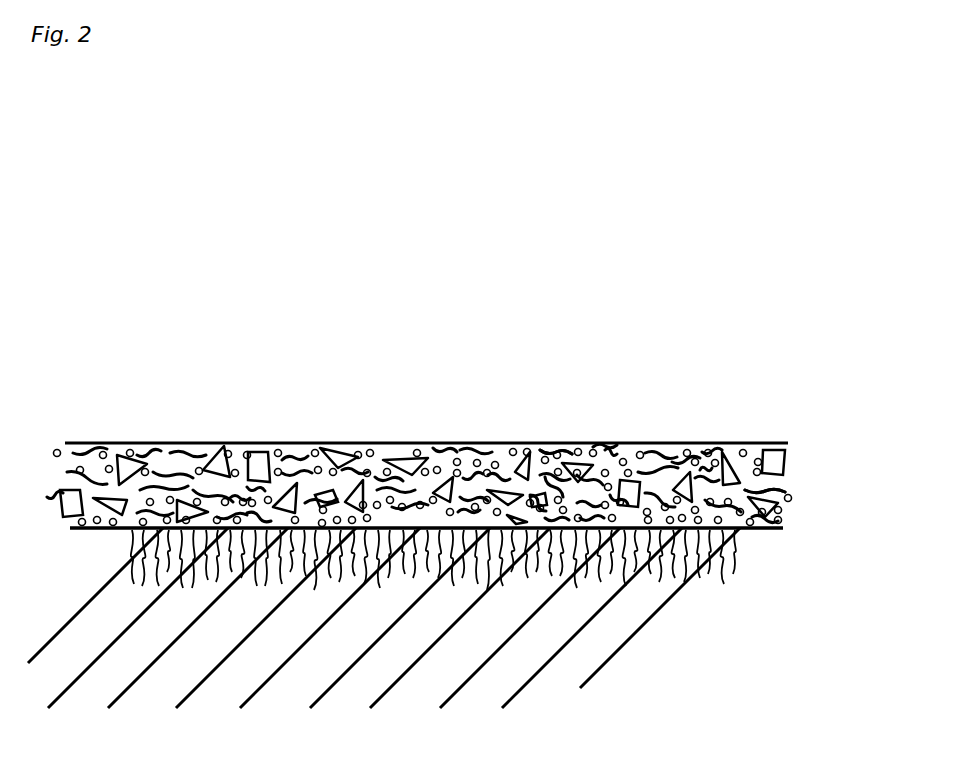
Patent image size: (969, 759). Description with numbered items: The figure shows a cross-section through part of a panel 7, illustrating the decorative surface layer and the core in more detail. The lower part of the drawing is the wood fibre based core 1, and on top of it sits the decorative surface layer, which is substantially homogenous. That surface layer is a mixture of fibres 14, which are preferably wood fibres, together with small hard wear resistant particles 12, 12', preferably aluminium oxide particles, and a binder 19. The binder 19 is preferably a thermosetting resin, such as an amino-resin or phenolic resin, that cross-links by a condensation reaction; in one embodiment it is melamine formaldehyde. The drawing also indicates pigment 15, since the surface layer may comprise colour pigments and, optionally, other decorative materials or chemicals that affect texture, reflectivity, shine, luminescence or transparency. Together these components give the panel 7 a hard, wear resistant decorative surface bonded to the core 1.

The wood fibre based core 1 is at (657, 597).
The panel 7 is at (145, 413).
The wear resistant particles 12 is at (812, 437).
The wear resistant particles 12' is at (585, 425).
The fibres 14 is at (762, 496).
The pigment 15 is at (782, 527).
The binder 19 is at (684, 459).